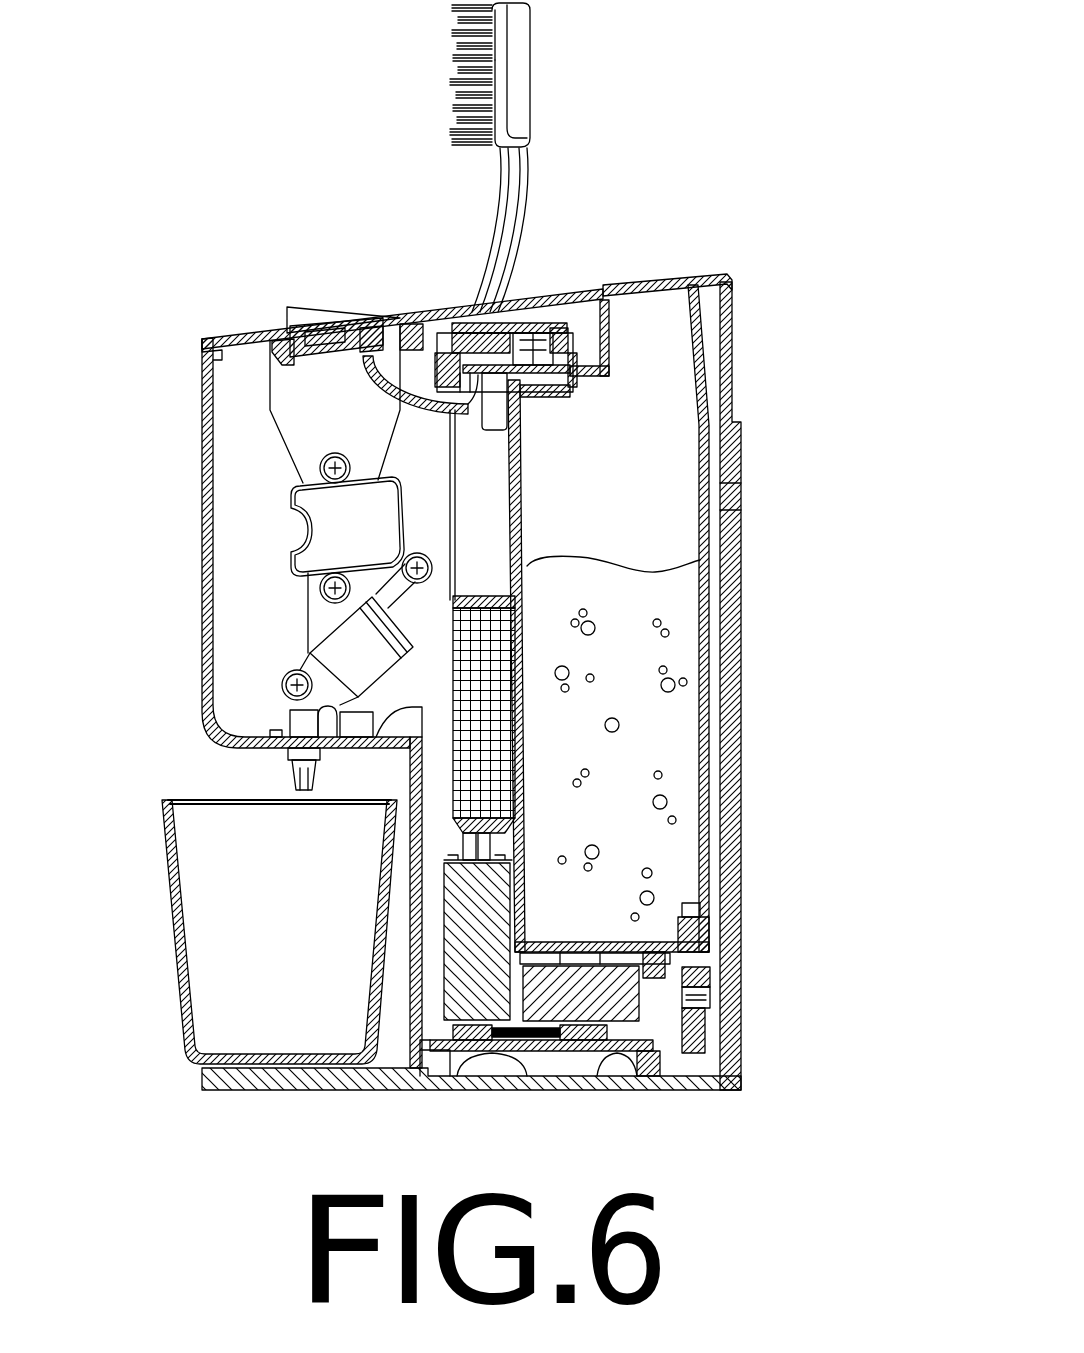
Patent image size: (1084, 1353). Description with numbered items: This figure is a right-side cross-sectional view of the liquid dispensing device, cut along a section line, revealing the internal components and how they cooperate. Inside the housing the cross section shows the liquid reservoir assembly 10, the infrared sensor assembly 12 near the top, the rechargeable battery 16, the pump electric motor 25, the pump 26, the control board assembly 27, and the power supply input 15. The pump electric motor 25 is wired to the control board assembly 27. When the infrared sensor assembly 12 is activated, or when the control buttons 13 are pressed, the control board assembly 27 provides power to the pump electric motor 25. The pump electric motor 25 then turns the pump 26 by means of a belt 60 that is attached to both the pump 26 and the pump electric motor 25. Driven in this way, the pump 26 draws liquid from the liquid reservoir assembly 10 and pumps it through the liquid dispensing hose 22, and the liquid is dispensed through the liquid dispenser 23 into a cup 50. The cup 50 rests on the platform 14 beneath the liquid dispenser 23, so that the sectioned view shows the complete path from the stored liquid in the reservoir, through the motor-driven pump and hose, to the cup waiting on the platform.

The liquid reservoir assembly 10 is at (665, 745).
The infrared sensor assembly 12 is at (291, 328).
The control buttons 13 is at (545, 293).
The platform 14 is at (390, 1068).
The power supply input 15 is at (707, 993).
The rechargeable battery 16 is at (490, 785).
The liquid dispensing hose 22 is at (305, 688).
The liquid dispenser 23 is at (288, 762).
The pump electric motor 25 is at (470, 990).
The pump 26 is at (567, 977).
The control board assembly 27 is at (513, 358).
The cup 50 is at (327, 903).
The belt 60 is at (640, 1037).